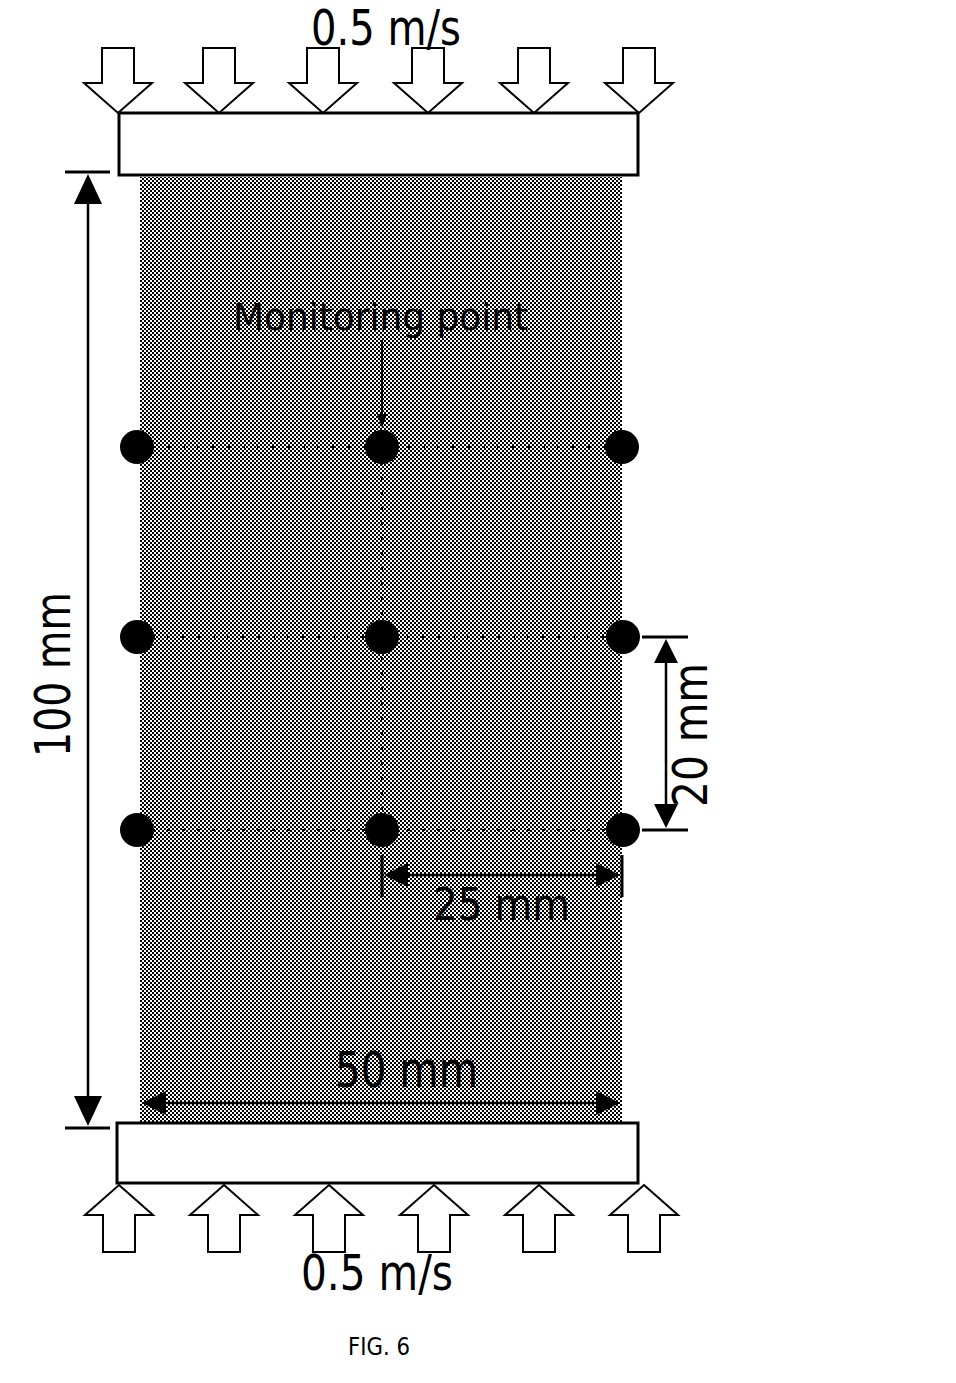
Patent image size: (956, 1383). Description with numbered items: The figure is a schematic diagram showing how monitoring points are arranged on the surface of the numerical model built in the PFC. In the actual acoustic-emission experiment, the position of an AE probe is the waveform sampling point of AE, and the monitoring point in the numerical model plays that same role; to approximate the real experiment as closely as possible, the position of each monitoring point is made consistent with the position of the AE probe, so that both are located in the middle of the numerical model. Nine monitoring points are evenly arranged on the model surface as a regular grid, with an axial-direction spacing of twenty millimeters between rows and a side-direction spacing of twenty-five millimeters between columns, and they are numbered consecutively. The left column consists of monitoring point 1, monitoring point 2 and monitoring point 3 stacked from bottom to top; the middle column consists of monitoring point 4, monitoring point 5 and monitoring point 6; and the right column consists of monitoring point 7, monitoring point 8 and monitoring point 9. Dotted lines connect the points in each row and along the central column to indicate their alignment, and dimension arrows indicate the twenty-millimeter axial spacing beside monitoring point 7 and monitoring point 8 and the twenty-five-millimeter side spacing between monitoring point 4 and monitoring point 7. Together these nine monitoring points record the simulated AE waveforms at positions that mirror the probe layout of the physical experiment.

The monitoring point 1 is at (137, 830).
The monitoring point 2 is at (137, 637).
The monitoring point 3 is at (137, 447).
The monitoring point 4 is at (382, 830).
The monitoring point 5 is at (382, 637).
The monitoring point 6 is at (382, 447).
The monitoring point 7 is at (623, 830).
The monitoring point 8 is at (623, 637).
The monitoring point 9 is at (622, 447).